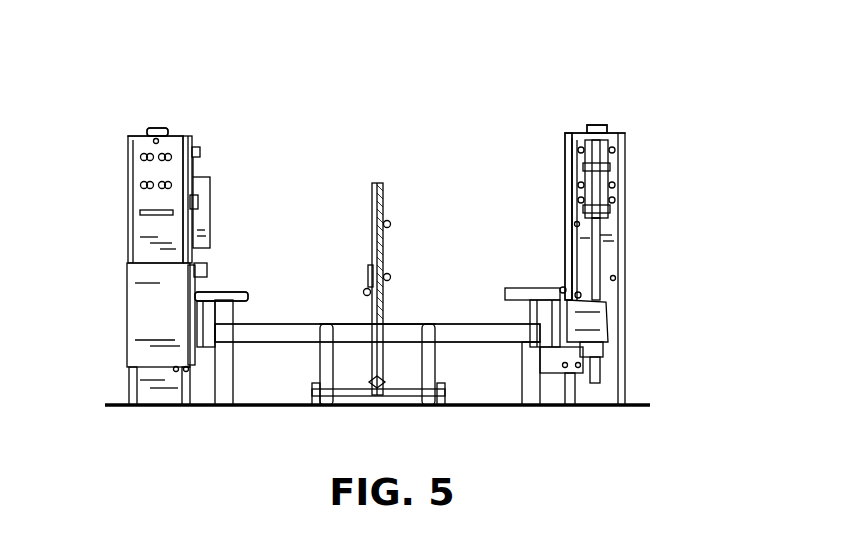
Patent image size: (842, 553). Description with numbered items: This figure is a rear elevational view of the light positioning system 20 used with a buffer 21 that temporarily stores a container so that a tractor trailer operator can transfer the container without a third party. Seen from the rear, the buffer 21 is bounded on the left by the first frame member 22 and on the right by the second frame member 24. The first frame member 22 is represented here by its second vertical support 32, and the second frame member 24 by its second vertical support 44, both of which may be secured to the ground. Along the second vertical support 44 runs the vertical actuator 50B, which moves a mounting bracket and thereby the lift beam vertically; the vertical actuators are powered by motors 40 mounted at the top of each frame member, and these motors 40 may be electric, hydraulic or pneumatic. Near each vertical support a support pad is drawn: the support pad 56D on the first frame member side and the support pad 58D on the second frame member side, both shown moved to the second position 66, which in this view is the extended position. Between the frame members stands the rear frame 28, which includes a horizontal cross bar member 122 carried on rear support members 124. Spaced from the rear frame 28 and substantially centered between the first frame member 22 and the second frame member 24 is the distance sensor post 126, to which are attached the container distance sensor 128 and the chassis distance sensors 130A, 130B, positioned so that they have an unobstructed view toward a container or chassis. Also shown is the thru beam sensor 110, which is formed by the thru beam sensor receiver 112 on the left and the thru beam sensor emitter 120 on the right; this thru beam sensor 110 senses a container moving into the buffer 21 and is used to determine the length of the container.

The light positioning system 20 is at (498, 116).
The buffer 21 is at (291, 130).
The first frame member 22 is at (137, 106).
The second frame member 24 is at (582, 112).
The rear frame 28 is at (469, 236).
The second vertical support 32 is at (128, 222).
The motors 40 is at (158, 118).
The second vertical support 44 is at (612, 140).
The vertical actuator 50B is at (618, 237).
The support pad 56D is at (247, 298).
The support pad 58D is at (516, 290).
The second position 66 is at (245, 280).
The thru beam sensor 110 is at (207, 186).
The thru beam sensor receiver 112 is at (199, 203).
The thru beam sensor emitter 120 is at (562, 212).
The cross bar member 122 is at (268, 335).
The rear support members 124 is at (327, 372).
The distance sensor post 126 is at (378, 186).
The container distance sensor 128 is at (390, 224).
The chassis distance sensor 130A is at (391, 277).
The chassis distance sensor 130B is at (364, 292).